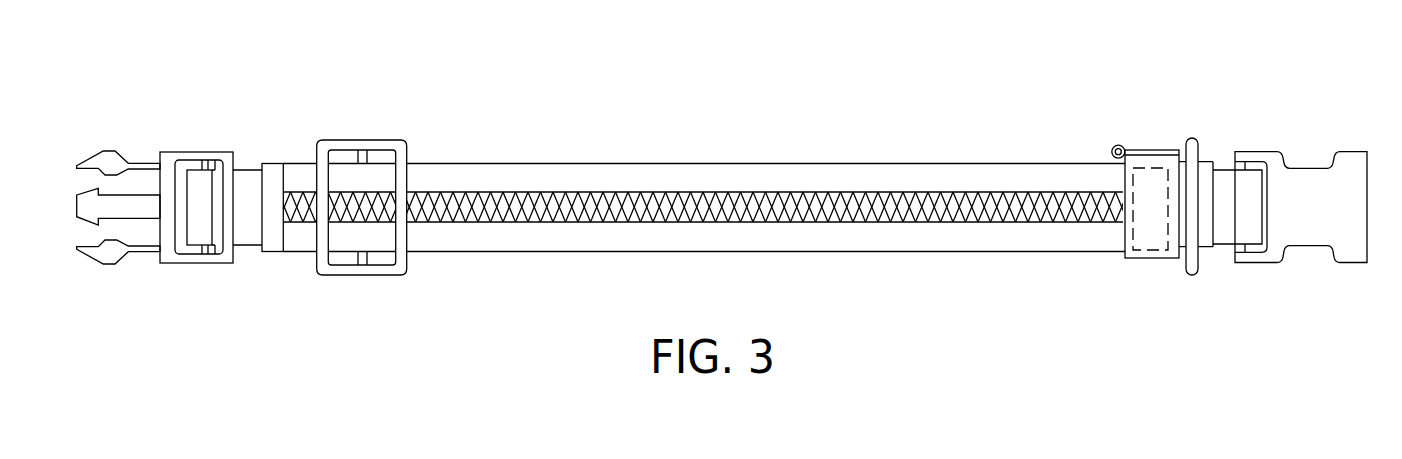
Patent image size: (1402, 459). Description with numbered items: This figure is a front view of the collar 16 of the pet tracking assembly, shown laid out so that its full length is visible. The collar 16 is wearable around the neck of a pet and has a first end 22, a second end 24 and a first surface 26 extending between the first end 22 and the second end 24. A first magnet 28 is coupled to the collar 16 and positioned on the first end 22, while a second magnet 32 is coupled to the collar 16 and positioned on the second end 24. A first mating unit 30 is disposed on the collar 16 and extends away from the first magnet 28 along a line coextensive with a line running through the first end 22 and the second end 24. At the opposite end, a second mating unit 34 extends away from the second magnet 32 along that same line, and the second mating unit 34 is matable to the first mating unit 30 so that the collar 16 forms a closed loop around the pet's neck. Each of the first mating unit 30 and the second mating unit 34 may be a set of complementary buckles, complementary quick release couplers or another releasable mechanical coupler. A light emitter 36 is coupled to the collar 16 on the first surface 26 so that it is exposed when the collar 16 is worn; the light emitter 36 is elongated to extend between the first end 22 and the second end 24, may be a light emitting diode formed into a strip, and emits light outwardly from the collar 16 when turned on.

The collar 16 is at (873, 162).
The first end 22 is at (285, 180).
The second end 24 is at (1181, 196).
The first surface 26 is at (596, 236).
The first magnet 28 is at (272, 240).
The first mating unit 30 is at (168, 160).
The second magnet 32 is at (1204, 247).
The second mating unit 34 is at (1348, 153).
The light emitter 36 is at (523, 196).